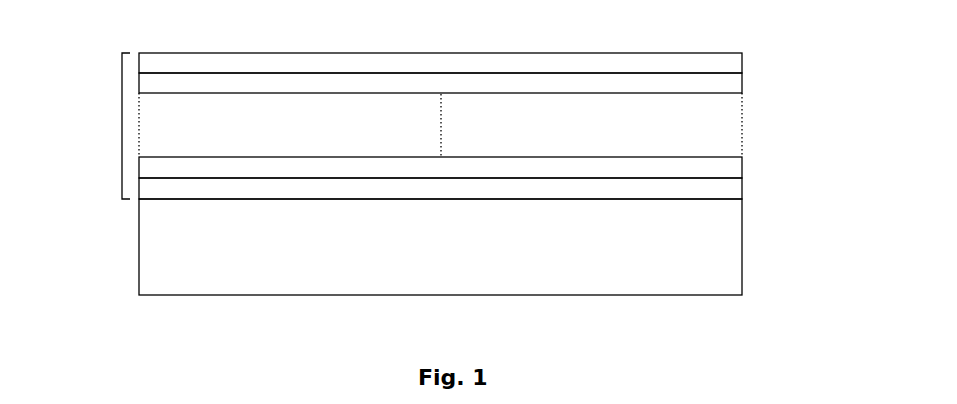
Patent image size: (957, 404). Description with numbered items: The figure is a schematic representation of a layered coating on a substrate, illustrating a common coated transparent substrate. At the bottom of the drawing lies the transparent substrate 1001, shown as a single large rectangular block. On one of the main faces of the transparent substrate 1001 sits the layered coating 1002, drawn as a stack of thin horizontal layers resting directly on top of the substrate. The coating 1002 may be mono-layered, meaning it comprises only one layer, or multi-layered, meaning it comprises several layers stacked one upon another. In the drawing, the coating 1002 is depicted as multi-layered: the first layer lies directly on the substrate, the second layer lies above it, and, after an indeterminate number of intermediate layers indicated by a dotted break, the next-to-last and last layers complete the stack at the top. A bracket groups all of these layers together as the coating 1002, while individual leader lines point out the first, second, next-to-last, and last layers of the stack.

The transparent substrate 1001 is at (139, 247).
The layered coating 1002 is at (123, 125).